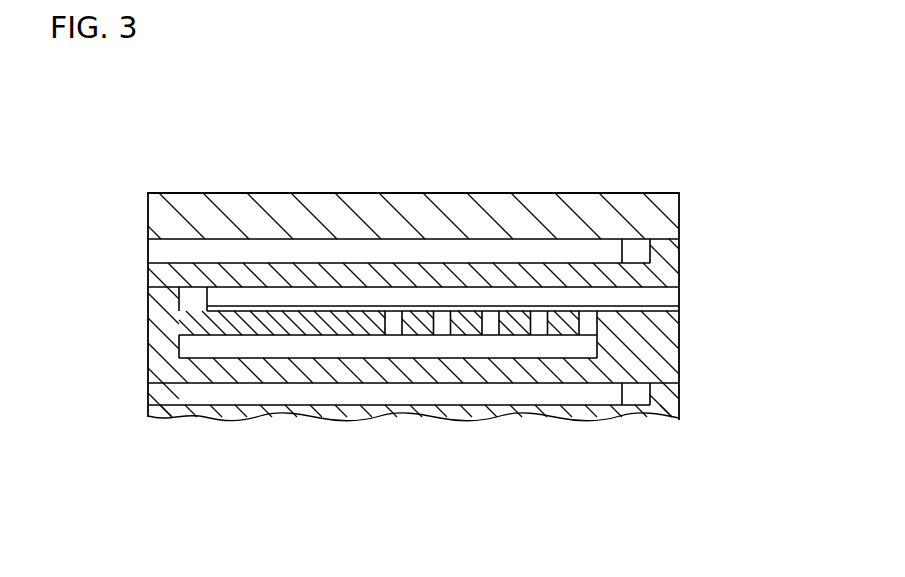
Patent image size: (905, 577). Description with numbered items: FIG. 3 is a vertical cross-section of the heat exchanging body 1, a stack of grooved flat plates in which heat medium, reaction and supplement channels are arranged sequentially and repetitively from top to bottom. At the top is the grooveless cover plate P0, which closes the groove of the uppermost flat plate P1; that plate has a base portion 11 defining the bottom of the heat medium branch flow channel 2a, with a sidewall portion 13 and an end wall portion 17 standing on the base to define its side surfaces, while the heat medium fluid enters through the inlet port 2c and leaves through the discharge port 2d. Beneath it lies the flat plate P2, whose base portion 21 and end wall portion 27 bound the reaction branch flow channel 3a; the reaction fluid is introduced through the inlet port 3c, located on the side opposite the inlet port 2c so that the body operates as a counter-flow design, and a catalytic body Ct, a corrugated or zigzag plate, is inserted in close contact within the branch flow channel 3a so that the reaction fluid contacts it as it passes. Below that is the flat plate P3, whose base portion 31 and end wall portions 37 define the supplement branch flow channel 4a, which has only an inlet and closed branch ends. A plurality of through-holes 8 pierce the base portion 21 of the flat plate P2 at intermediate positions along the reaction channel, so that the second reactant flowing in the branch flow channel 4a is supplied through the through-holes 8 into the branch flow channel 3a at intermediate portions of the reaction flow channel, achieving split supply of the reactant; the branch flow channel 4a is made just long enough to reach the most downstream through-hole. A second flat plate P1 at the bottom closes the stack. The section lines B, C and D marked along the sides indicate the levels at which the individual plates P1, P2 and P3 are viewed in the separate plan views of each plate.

The heat exchanging body 1 is at (133, 203).
The branch flow channel of heat medium flow channel 2a is at (183, 268).
The inlet port of heat medium flow channel 2c is at (629, 247).
The discharge port of heat medium flow channel 2d is at (148, 250).
The branch flow channel of reaction flow channel 3a is at (660, 290).
The inlet port of reaction flow channel 3c is at (200, 290).
The branch flow channel of supplement channel 4a is at (191, 356).
The through-hole 8 is at (588, 328).
The base portion 11 is at (373, 275).
The sidewall portion 13 is at (443, 247).
The end wall portion 17 is at (655, 240).
The base portion 21 is at (668, 320).
The end wall portion 27 is at (148, 290).
The base portion 31 is at (285, 360).
The end wall portion 37 is at (150, 347).
The catalytic body Ct is at (517, 297).
The flat plate (cover body) P0 is at (680, 208).
The flat plate P1 is at (680, 267).
The flat plate P2 is at (158, 328).
The flat plate P3 is at (225, 377).
The section line B is at (112, 243).
The section line C is at (112, 292).
The section line D is at (112, 340).